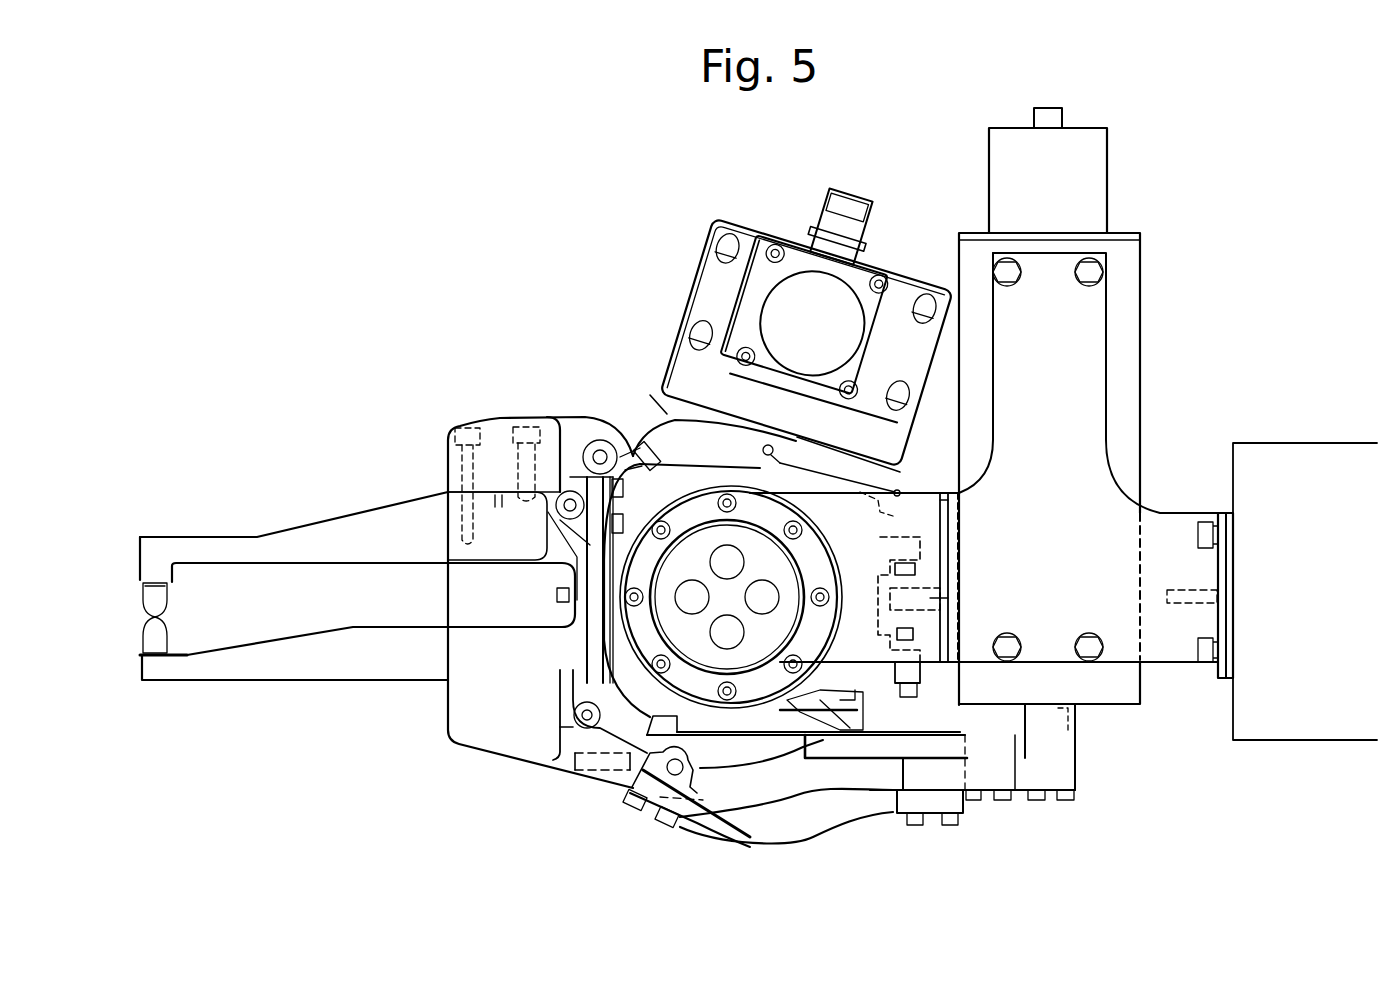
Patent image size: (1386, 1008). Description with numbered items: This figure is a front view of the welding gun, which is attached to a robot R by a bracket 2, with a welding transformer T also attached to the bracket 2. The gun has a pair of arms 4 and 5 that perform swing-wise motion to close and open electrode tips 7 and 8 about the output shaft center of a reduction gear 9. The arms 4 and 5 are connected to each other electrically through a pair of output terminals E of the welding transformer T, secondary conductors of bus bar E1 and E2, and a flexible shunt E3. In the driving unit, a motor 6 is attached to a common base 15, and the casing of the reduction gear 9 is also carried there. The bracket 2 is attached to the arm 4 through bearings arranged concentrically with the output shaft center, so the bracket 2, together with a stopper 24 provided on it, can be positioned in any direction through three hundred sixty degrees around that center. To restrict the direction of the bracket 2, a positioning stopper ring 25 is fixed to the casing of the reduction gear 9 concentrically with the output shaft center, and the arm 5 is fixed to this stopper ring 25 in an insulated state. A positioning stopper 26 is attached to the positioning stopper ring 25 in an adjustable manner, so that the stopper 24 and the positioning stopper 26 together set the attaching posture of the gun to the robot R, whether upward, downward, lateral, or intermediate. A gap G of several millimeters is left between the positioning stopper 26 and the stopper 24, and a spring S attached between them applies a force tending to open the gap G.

The bracket 2 is at (1118, 625).
The arm 4 is at (500, 445).
The arm 5 is at (515, 732).
The motor 6 is at (757, 282).
The electrode tip 7 is at (152, 595).
The electrode tip 8 is at (150, 632).
The reduction gear 9 is at (692, 640).
The common base 15 is at (668, 398).
The stopper 24 is at (960, 582).
The positioning stopper ring 25 is at (965, 500).
The positioning stopper 26 is at (927, 680).
The output terminals E is at (1060, 745).
The secondary conductor of bus bar E1 is at (1035, 770).
The secondary conductor of bus bar E2 is at (980, 745).
The flexible shunt E3 is at (800, 838).
The gap G is at (900, 612).
The robot R is at (1310, 705).
The spring S is at (885, 505).
The welding transformer T is at (1127, 382).